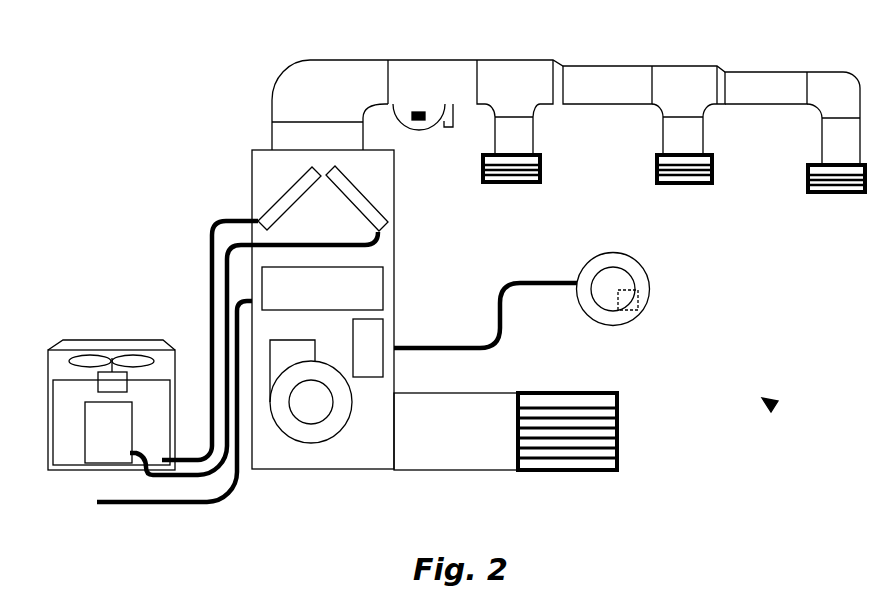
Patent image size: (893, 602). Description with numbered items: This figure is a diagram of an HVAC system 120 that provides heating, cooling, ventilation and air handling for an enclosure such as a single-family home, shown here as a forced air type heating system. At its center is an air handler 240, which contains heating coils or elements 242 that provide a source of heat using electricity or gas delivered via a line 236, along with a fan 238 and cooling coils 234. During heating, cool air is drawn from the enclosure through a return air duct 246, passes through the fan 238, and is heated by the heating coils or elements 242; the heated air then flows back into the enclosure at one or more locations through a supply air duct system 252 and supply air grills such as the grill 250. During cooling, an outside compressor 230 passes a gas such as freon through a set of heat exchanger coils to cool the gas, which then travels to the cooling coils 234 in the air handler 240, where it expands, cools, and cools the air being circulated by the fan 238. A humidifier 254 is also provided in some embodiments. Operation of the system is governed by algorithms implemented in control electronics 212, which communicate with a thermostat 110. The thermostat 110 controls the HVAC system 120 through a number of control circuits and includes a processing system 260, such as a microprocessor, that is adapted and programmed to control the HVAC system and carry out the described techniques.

The thermostat 110 is at (650, 283).
The HVAC system 120 is at (772, 405).
The control electronics 212 is at (386, 329).
The outside compressor 230 is at (113, 340).
The cooling coils 234 is at (283, 193).
The line 236 is at (216, 506).
The fan 238 is at (318, 433).
The air handler 240 is at (252, 151).
The heating coils or elements 242 is at (342, 300).
The return air duct 246 is at (617, 438).
The supply air grill 250 is at (540, 168).
The supply air duct system 252 is at (600, 63).
The humidifier 254 is at (427, 128).
The processing system 260 is at (642, 304).